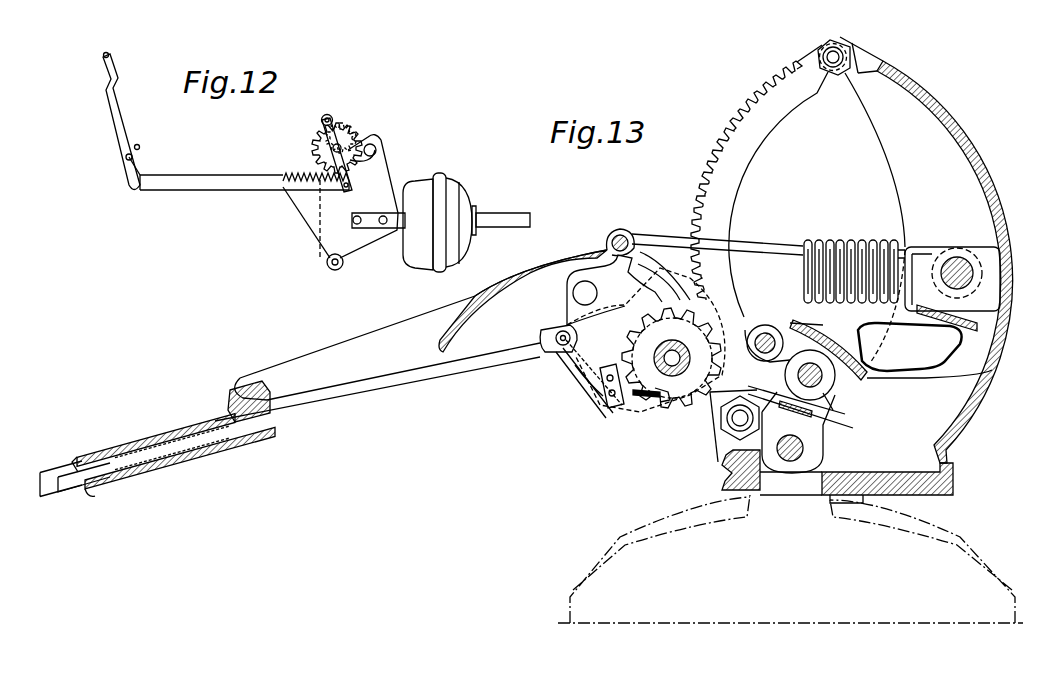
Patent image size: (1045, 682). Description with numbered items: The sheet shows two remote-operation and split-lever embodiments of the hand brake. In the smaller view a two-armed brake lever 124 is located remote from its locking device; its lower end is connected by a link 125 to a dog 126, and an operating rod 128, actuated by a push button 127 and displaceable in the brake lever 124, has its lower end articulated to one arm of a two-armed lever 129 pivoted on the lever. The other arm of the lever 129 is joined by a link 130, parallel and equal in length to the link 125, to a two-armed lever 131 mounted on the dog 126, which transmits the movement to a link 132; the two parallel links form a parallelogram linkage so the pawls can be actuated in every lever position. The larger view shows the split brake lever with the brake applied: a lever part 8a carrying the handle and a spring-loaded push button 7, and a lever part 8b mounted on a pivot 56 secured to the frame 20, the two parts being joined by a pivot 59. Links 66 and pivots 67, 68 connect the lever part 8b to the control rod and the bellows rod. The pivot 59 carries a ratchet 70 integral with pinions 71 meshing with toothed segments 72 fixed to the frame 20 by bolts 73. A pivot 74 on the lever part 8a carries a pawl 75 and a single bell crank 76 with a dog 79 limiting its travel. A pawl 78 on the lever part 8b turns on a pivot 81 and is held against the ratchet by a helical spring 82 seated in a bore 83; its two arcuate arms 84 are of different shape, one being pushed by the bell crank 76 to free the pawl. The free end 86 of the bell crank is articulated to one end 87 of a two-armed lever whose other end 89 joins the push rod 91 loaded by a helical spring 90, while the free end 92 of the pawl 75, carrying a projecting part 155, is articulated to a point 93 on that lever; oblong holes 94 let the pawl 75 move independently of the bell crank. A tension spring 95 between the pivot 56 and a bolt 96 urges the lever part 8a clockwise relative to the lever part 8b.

In FIG. 13, the push button 7 is at (62, 470).
In FIG. 13, the lever part 8a is at (358, 335).
In FIG. 13, the lever part 8b is at (924, 378).
In FIG. 13, the frame 20 is at (965, 136).
In FIG. 13, the pivot 56 is at (958, 256).
In FIG. 13, the pivot 59 is at (702, 410).
In FIG. 13, the links 66 is at (823, 440).
In FIG. 13, the pivot 67 is at (836, 386).
In FIG. 13, the pivot 68 is at (803, 451).
In FIG. 13, the ratchet 70 is at (695, 405).
In FIG. 13, the pinions 71 is at (665, 408).
In FIG. 13, the toothed segments 72 is at (758, 101).
In FIG. 13, the bolts 73 is at (843, 47).
In FIG. 13, the pivot 74 is at (573, 293).
In FIG. 13, the pawl 75 is at (707, 310).
In FIG. 13, the bell crank 76 is at (641, 248).
In FIG. 13, the pawl 78 is at (724, 438).
In FIG. 13, the dog 79 is at (655, 262).
In FIG. 13, the pivot 81 is at (765, 332).
In FIG. 13, the helical spring 82 is at (852, 424).
In FIG. 13, the bore 83 is at (845, 408).
In FIG. 13, the arcuate arms 84 is at (705, 310).
In FIG. 13, the free end 86 is at (602, 410).
In FIG. 13, the end 87 is at (600, 398).
In FIG. 13, the end 89 is at (556, 358).
In FIG. 13, the helical spring 90 is at (168, 437).
In FIG. 13, the push rod 91 is at (374, 397).
In FIG. 13, the free end 92 is at (560, 322).
In FIG. 13, the point 93 is at (573, 368).
In FIG. 13, the oblong holes 94 is at (611, 412).
In FIG. 13, the helical tension spring 95 is at (823, 240).
In FIG. 13, the bolt 96 is at (611, 237).
In FIG. 13, the projecting part 155 is at (600, 376).
In FIG. 12, the brake lever 124 is at (126, 156).
In FIG. 12, the link 125 is at (225, 192).
In FIG. 12, the dog 126 is at (385, 166).
In FIG. 12, the push button 127 is at (109, 55).
In FIG. 12, the operating rod 128 is at (127, 107).
In FIG. 12, the two-armed lever 129 is at (141, 152).
In FIG. 12, the link 130 is at (226, 173).
In FIG. 12, the two-armed lever 131 is at (313, 152).
In FIG. 12, the link 132 is at (333, 117).